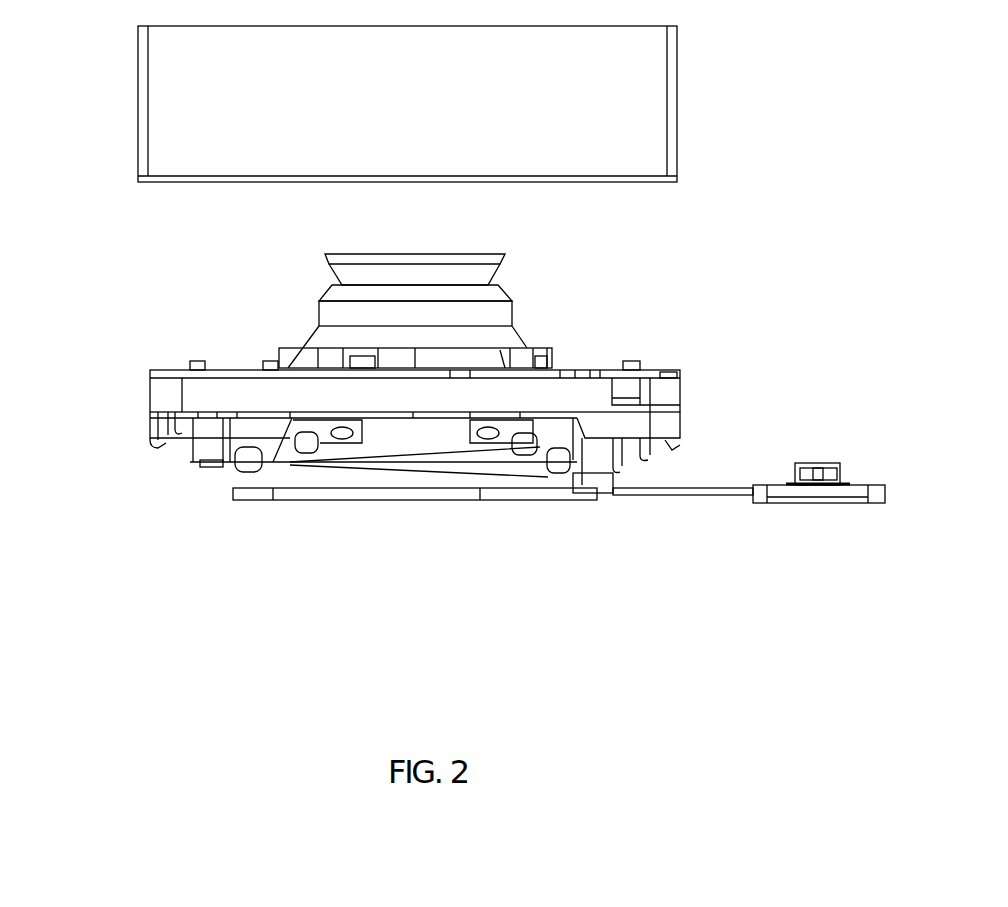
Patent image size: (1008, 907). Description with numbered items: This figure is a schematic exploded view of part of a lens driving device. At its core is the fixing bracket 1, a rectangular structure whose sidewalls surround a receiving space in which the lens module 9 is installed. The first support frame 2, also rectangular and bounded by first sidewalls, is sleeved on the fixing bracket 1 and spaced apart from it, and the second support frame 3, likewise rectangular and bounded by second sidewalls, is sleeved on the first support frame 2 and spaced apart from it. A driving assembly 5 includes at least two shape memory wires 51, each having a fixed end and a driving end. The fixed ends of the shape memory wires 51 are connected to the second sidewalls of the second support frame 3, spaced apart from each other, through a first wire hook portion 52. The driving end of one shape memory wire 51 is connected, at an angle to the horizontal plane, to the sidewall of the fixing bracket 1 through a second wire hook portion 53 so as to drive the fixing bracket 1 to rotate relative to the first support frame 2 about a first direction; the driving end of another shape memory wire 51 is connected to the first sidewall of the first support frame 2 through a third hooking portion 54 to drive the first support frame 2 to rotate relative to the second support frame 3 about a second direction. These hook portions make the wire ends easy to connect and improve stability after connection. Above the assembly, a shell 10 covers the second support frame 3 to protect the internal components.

The fixing bracket 1 is at (225, 480).
The first support frame 2 is at (193, 425).
The second support frame 3 is at (162, 395).
The driving assembly 5 is at (565, 630).
The shape memory wire 51 is at (350, 463).
The first wire hook portion 52 is at (520, 450).
The second wire hook portion 53 is at (558, 466).
The third hooking portion 54 is at (248, 467).
The lens module 9 is at (347, 307).
The shell 10 is at (158, 98).